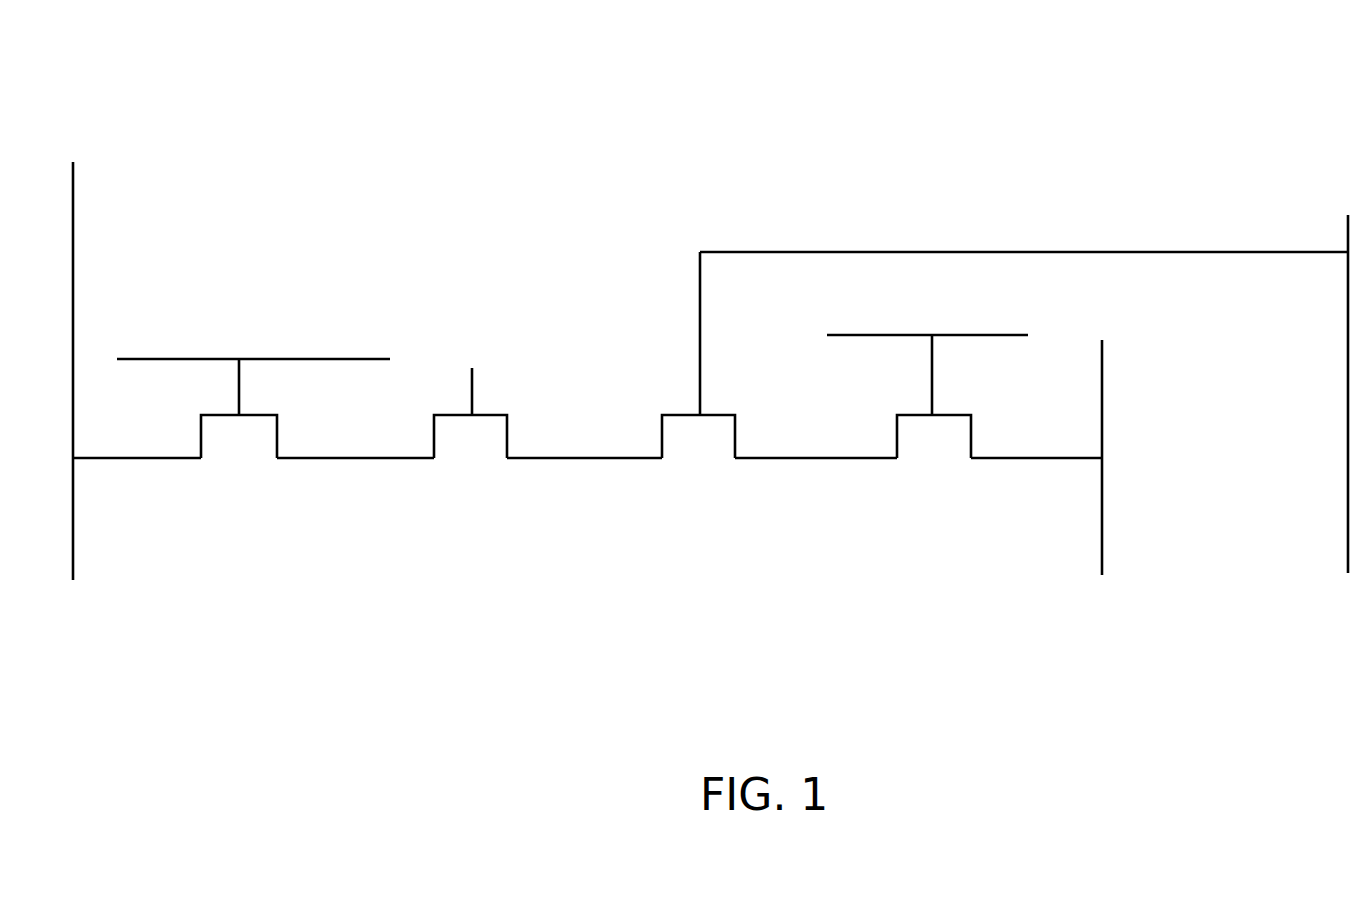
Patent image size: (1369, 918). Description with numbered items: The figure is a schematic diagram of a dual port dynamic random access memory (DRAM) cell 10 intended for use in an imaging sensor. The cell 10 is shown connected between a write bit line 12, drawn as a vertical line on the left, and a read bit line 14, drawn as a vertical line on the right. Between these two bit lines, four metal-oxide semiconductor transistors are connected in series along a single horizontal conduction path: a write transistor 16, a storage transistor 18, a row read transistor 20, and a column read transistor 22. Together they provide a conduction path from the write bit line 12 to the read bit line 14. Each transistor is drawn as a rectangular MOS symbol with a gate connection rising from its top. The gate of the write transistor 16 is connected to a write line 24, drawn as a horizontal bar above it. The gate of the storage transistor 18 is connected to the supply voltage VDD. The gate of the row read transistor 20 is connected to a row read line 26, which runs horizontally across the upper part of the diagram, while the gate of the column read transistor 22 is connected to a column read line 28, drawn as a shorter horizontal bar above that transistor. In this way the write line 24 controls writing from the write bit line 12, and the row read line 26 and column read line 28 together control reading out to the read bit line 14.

The dual port dynamic random access memory cell 10 is at (1186, 122).
The write bit line 12 is at (73, 273).
The read bit line 14 is at (1102, 408).
The write transistor 16 is at (203, 446).
The storage transistor 18 is at (435, 443).
The row read transistor 20 is at (663, 443).
The column read transistor 22 is at (898, 445).
The write line 24 is at (305, 359).
The row read line 26 is at (795, 252).
The column read line 28 is at (967, 335).